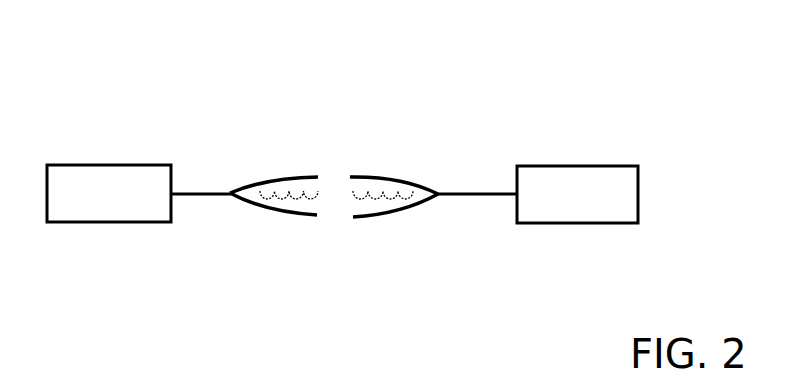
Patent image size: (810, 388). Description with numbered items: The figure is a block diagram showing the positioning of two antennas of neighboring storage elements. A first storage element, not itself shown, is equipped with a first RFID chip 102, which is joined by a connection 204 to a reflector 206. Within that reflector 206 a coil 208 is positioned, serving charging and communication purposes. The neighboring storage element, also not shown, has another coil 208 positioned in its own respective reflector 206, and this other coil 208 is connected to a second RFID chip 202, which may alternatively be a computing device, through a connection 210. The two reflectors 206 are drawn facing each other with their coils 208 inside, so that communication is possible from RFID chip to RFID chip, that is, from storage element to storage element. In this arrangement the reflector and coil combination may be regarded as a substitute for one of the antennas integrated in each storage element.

The RFID chip 102 is at (100, 140).
The RFID chip 202 is at (597, 144).
The connection 204 is at (203, 211).
The reflector 206 is at (297, 211).
The coil 208 is at (390, 282).
The connection 210 is at (469, 189).